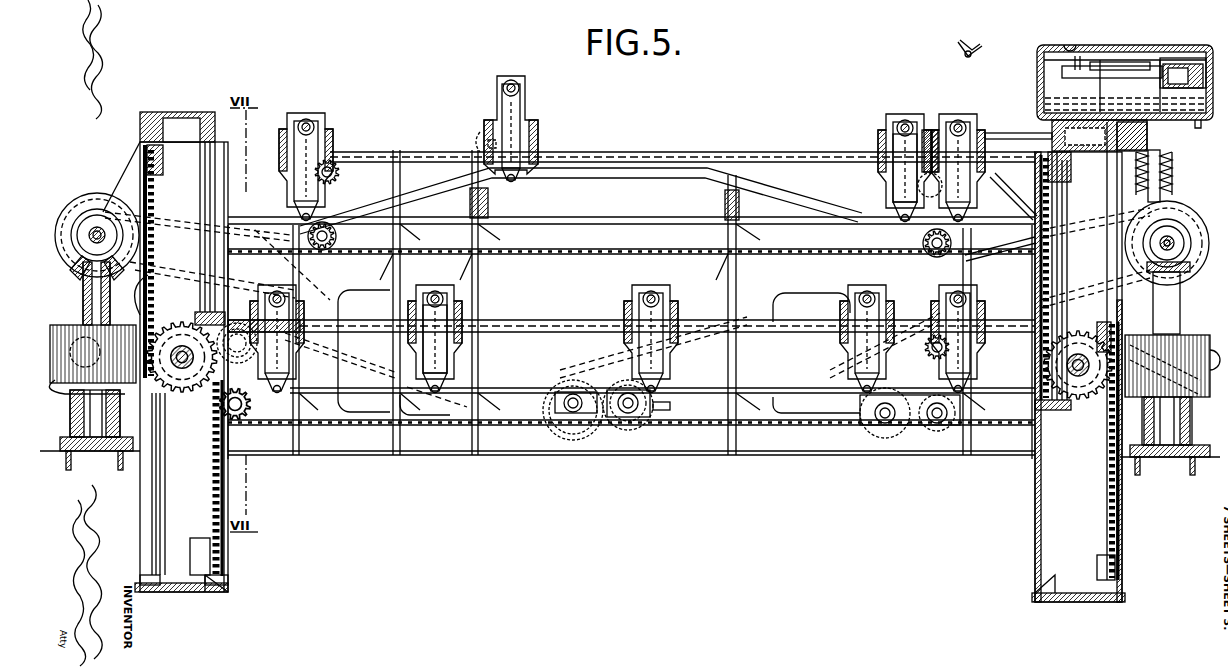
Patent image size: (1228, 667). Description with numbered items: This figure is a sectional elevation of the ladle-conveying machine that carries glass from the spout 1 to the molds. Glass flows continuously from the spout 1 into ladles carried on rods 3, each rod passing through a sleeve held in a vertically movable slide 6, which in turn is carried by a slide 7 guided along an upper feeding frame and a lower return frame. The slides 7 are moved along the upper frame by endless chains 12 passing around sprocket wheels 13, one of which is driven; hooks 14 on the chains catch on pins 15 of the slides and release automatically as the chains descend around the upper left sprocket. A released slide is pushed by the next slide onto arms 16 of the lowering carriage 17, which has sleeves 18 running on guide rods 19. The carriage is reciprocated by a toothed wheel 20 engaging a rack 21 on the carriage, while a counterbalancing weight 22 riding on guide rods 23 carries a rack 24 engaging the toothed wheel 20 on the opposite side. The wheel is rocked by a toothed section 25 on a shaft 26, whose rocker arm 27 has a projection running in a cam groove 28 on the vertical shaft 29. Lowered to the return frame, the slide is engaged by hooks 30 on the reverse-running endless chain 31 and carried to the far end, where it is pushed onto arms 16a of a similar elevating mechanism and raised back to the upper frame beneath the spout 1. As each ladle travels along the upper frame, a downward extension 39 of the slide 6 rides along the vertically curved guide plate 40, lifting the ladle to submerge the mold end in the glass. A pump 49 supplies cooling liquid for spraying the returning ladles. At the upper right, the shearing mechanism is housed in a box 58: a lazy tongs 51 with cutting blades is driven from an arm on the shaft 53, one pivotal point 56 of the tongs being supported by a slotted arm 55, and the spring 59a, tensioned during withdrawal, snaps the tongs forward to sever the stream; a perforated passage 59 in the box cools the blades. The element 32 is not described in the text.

The spout 1 is at (978, 54).
The shaft or rod 3 is at (519, 90).
The vertically movable slide 6 is at (320, 128).
The slide 7 is at (333, 134).
The endless chain 12 is at (708, 152).
The sprocket wheel 13 is at (340, 172).
The hook 14 is at (596, 152).
The pin 15 is at (480, 130).
The arm 16 is at (255, 325).
The arm of elevating mechanism 16a is at (1022, 178).
The lowering carriage 17 is at (228, 497).
The sleeve 18 is at (212, 312).
The guide rod 19 is at (200, 474).
The toothed wheel 20 is at (184, 392).
The rack 21 is at (210, 493).
The weight 22 is at (140, 172).
The guide rod 23 is at (157, 461).
The rack 24 is at (156, 196).
The toothed section 25 is at (156, 281).
The shaft 26 is at (45, 395).
The rocker arm 27 is at (80, 328).
The cam groove 28 is at (134, 392).
The vertical shaft 29 is at (84, 291).
The hook 30 is at (684, 427).
The endless chain 31 is at (515, 428).
The bar 32 is at (1018, 134).
The downward extension 39 is at (450, 368).
The vertically curved guide plate 40 is at (585, 178).
The pump 49 is at (643, 417).
The lazy tongs 51 is at (1095, 66).
The shaft 53 is at (1183, 75).
The arm 55 is at (1182, 58).
The pivotal point 56 is at (1130, 62).
The box 58 is at (1046, 52).
The perforated passage 59 is at (1076, 56).
The spring 59a is at (1162, 166).